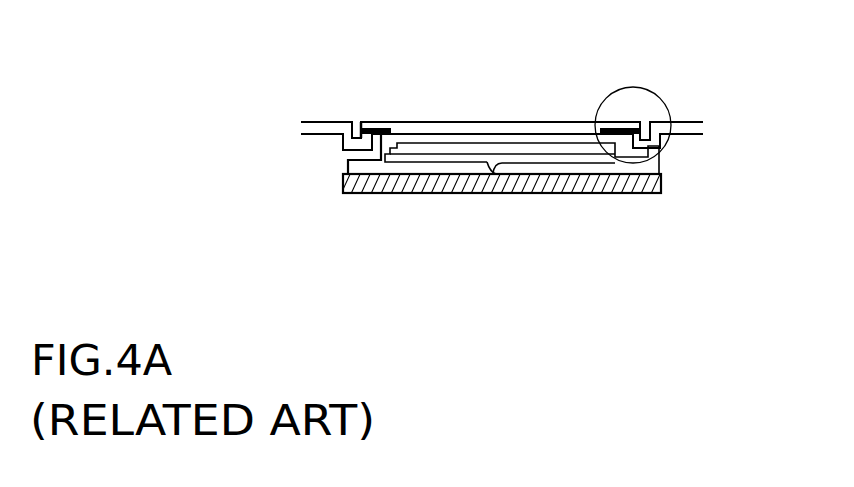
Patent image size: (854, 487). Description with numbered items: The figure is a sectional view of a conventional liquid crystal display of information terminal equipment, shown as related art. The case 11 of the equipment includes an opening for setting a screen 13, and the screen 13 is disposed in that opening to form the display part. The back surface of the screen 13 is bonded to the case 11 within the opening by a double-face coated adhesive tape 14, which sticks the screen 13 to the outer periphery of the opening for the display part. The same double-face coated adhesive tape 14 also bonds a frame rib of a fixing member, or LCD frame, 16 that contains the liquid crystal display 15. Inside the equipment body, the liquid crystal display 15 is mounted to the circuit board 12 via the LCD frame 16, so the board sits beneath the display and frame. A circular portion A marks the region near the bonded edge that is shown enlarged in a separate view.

The case 11 is at (702, 137).
The circuit board 12 is at (537, 193).
The screen 13 is at (548, 122).
The double-face coated adhesive tape 14 is at (376, 131).
The liquid crystal display 15 is at (462, 147).
The fixing member (LCD frame) 16 is at (348, 162).
The circular portion A is at (657, 93).